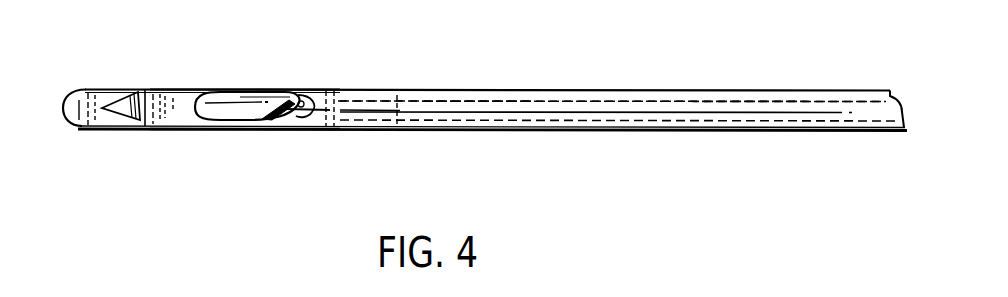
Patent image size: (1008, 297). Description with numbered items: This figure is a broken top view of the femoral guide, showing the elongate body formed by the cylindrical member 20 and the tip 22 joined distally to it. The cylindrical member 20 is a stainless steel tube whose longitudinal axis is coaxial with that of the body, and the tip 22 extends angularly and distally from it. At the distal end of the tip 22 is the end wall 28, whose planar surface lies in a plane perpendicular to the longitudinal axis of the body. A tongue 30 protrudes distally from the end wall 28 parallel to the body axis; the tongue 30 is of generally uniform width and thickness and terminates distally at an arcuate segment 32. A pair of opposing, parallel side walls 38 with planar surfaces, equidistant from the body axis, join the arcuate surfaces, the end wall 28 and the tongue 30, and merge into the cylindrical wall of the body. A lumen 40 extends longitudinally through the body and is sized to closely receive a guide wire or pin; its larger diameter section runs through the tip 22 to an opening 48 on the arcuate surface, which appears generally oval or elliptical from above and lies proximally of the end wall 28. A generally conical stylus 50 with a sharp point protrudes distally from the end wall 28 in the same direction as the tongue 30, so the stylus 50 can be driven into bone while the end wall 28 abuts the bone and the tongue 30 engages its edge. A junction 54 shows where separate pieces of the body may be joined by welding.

The cylindrical member 20 is at (648, 90).
The tip 22 is at (240, 92).
The end wall 28 is at (139, 128).
The tongue 30 is at (93, 128).
The arcuate segment 32 is at (63, 115).
The side walls 38 is at (201, 89).
The lumen 40 is at (513, 101).
The opening 48 is at (311, 127).
The stylus 50 is at (131, 89).
The junction 54 is at (382, 112).